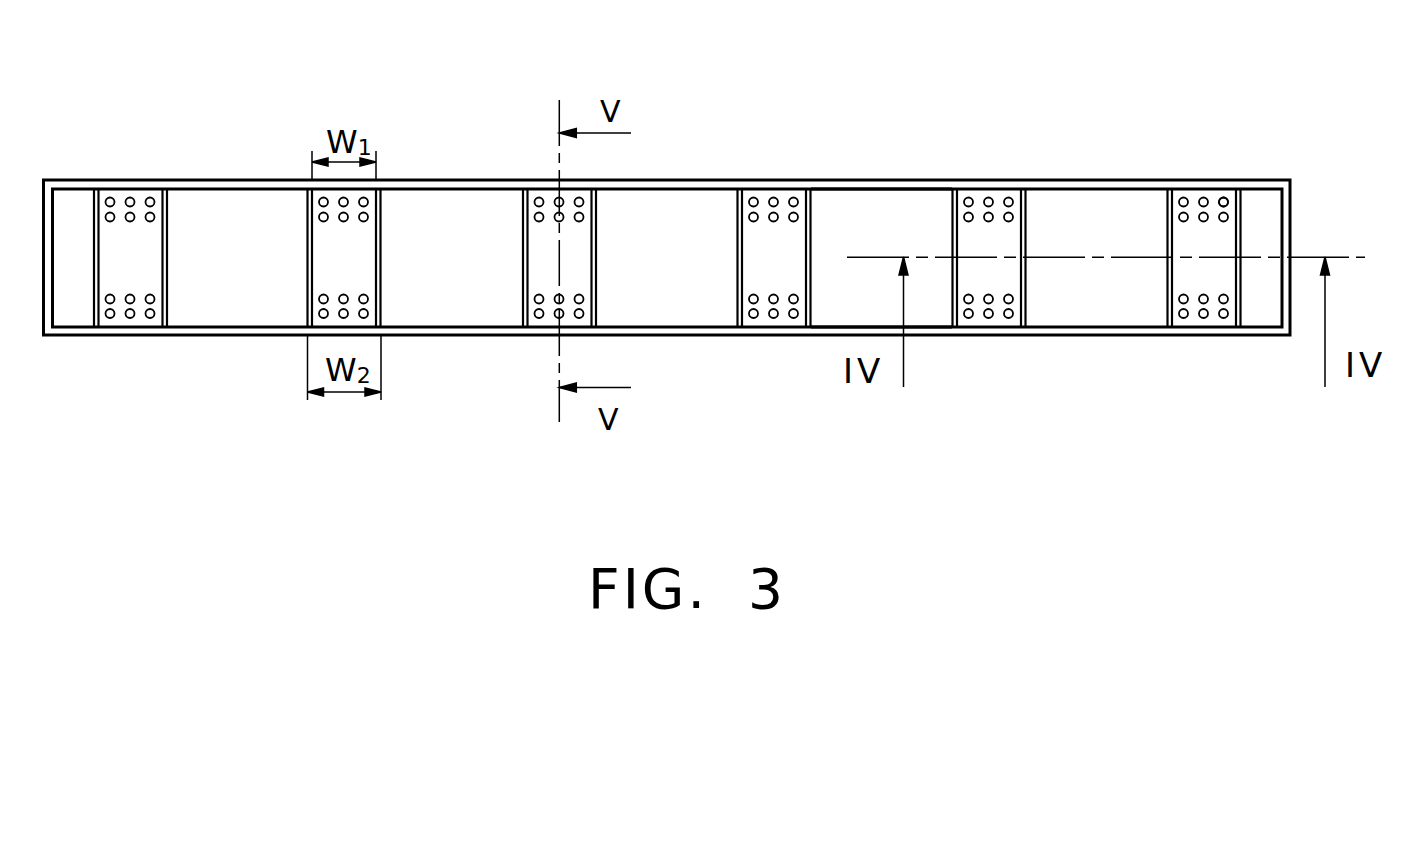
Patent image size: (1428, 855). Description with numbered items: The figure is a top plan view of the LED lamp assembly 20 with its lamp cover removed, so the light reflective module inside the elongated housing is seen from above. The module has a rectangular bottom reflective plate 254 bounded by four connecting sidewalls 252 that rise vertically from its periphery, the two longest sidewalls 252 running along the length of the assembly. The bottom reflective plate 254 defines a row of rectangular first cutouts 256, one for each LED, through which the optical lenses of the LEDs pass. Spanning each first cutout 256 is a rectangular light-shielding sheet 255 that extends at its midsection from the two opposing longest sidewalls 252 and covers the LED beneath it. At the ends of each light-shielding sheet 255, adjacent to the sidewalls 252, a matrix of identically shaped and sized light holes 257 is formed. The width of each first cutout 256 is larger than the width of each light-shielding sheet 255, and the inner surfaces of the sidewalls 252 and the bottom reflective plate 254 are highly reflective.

The LED lamp assembly 20 is at (786, 36).
The connecting sidewalls 252 is at (1085, 189).
The bottom reflective plate 254 is at (885, 222).
The light-shielding sheet 255 is at (1222, 245).
The first cutouts 256 is at (740, 197).
The light holes 257 is at (1224, 200).